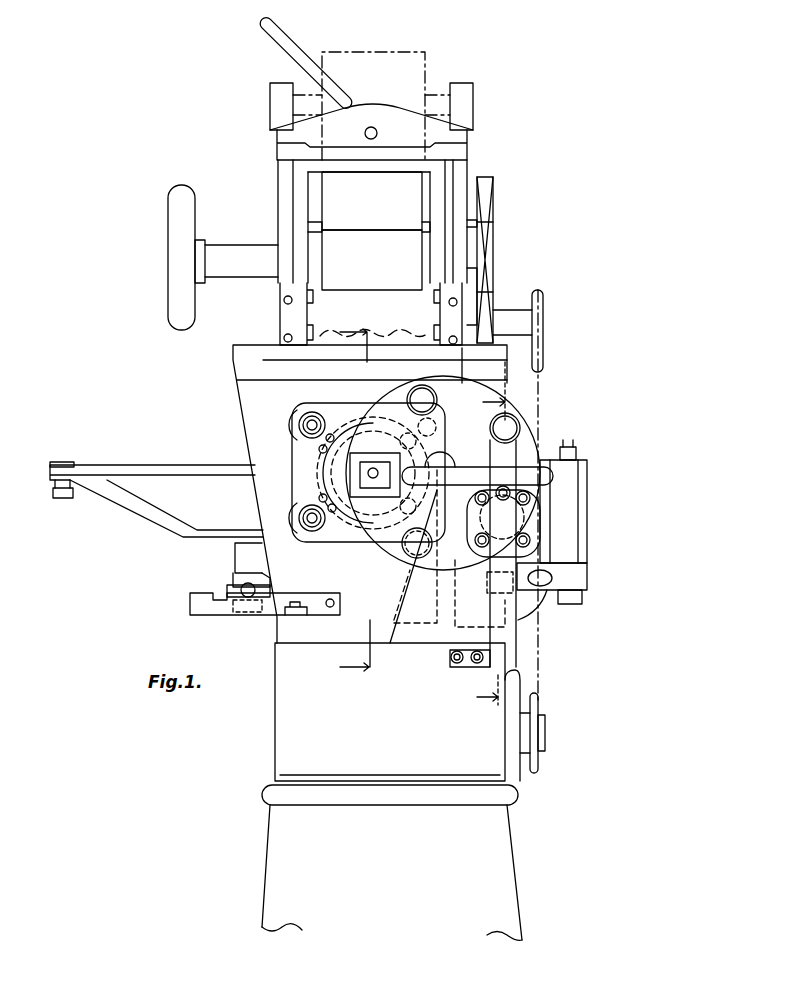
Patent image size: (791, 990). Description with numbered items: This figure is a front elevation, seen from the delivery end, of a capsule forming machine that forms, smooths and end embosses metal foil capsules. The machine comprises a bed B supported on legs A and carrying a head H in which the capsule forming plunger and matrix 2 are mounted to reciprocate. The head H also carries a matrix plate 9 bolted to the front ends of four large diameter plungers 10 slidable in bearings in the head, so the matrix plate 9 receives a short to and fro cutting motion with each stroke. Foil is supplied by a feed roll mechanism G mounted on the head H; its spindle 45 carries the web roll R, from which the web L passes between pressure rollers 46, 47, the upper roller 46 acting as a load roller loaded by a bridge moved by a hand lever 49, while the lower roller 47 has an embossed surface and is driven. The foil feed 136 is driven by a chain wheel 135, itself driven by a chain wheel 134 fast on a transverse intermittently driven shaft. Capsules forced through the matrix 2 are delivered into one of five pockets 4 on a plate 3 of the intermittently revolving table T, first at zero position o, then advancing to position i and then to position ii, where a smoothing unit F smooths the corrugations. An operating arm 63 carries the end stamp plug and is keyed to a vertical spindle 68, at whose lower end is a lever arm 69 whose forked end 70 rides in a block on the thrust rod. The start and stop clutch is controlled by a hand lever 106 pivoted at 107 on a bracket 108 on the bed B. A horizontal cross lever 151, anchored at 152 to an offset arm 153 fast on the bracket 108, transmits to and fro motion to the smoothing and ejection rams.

The hand lever 49 is at (284, 36).
The web roll R is at (414, 70).
The spindle 45 is at (440, 100).
The feed roll mechanism G is at (317, 252).
The upper pressure roller 46 is at (372, 201).
The lower pressure roller 47 is at (372, 260).
The foil feed 136 is at (494, 263).
The chain wheel 135 is at (543, 333).
The head H is at (247, 408).
The matrix 2 is at (374, 490).
The web L is at (322, 347).
The matrix plate 9 is at (340, 410).
The plungers 10 is at (306, 413).
The zero position o is at (350, 472).
The pockets 4 is at (320, 453).
The plate 3 is at (499, 541).
The operating arm 63 is at (480, 467).
The table T is at (518, 416).
The position ii is at (503, 521).
The vertical spindle 68 is at (572, 452).
The lever arm 69 is at (548, 595).
The fork 70 is at (490, 585).
The smoothing unit F is at (421, 546).
The position i is at (413, 566).
The cross lever 151 is at (163, 468).
The anchorage 152 is at (66, 463).
The offset arm 153 is at (160, 514).
The bracket 108 is at (242, 556).
The pivot 107 is at (240, 580).
The hand lever 106 is at (244, 598).
The bed B is at (290, 718).
The chain wheel 134 is at (545, 733).
The legs A is at (282, 830).